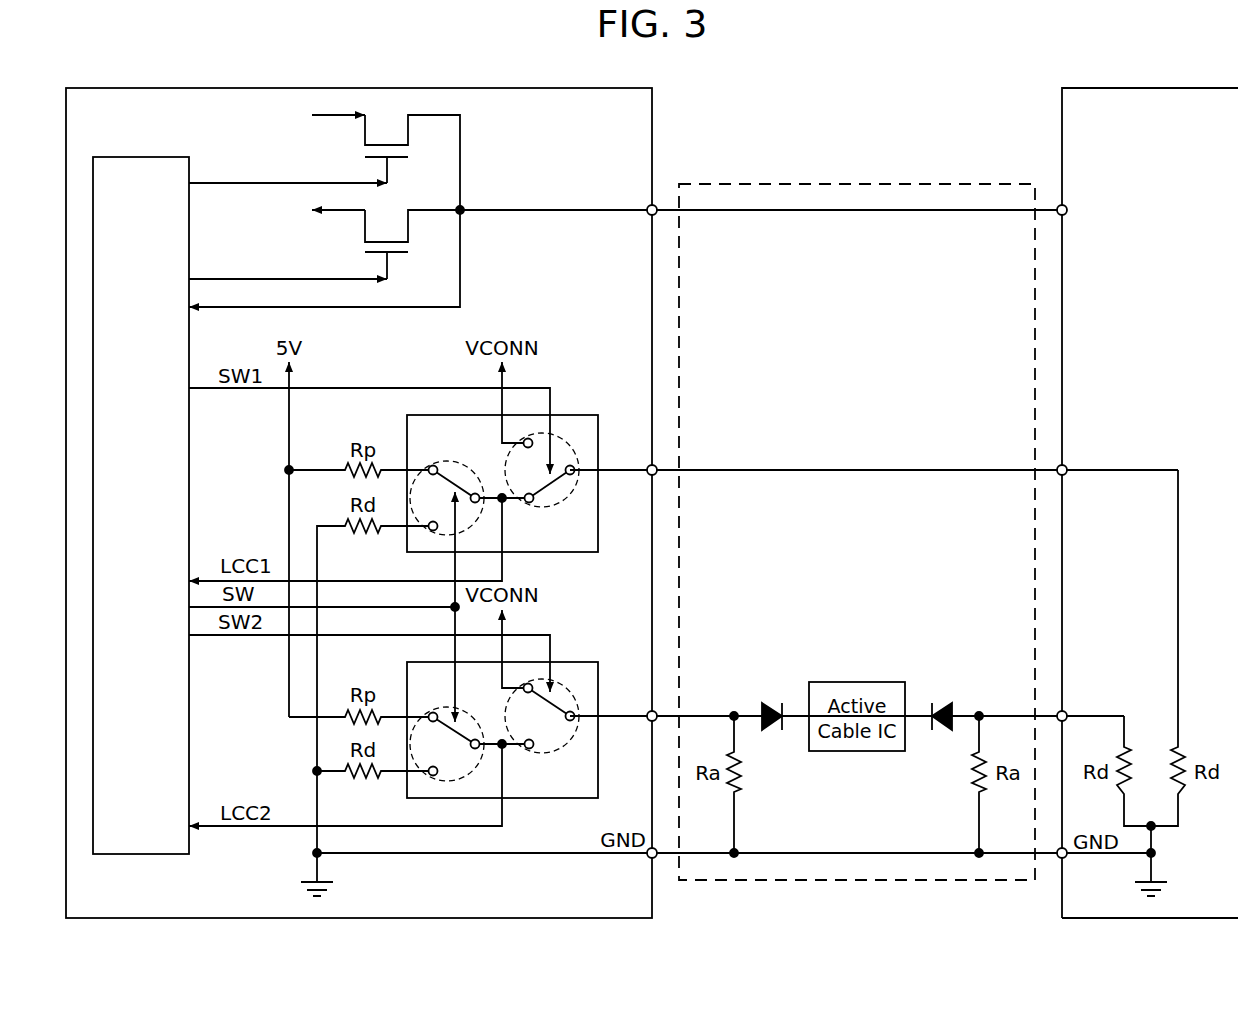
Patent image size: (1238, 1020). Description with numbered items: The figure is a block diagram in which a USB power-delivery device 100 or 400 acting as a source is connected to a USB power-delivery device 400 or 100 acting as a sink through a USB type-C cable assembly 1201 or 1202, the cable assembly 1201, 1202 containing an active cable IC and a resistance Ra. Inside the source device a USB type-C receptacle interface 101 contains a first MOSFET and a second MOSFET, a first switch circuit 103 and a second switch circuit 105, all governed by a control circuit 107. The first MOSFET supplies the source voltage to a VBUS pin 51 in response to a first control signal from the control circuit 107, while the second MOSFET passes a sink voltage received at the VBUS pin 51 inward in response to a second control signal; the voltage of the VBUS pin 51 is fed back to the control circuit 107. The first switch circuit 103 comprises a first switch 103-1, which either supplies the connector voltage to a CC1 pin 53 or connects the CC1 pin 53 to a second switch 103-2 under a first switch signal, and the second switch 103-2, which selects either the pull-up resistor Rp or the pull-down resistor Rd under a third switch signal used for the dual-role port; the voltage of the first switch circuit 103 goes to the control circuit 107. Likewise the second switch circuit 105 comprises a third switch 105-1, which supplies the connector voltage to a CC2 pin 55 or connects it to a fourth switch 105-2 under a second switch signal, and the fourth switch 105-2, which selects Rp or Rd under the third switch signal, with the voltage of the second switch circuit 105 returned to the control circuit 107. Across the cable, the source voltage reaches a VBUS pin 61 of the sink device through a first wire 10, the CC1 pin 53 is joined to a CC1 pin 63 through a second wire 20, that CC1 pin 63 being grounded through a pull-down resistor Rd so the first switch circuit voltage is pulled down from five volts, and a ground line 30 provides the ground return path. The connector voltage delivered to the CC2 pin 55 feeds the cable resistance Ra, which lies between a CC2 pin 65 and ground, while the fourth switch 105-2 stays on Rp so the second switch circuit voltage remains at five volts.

The first USB power-delivery device 100 is at (362, 88).
The fourth USB power-delivery device 400 is at (1154, 88).
The USB type-C receptacle interface 101 is at (546, 156).
The control circuit 107 is at (142, 157).
The first switch circuit 103 is at (514, 463).
The first switch 103-1 is at (543, 507).
The second switch 103-2 is at (445, 463).
The second switch circuit 105 is at (482, 710).
The third switch 105-1 is at (543, 753).
The fourth switch 105-2 is at (437, 708).
The VBUS pin 51 is at (650, 215).
The CC1 pin 53 is at (650, 477).
The CC2 pin 55 is at (650, 723).
The VBUS pin 61 is at (1067, 217).
The CC1 pin 63 is at (1067, 477).
The CC2 pin 65 is at (1067, 723).
The first wire 10 is at (857, 212).
The second wire 20 is at (858, 470).
The ground line 30 is at (858, 853).
The USB type-C cable assembly 1201 is at (857, 511).
The USB type-C cable assembly 1202 is at (860, 184).